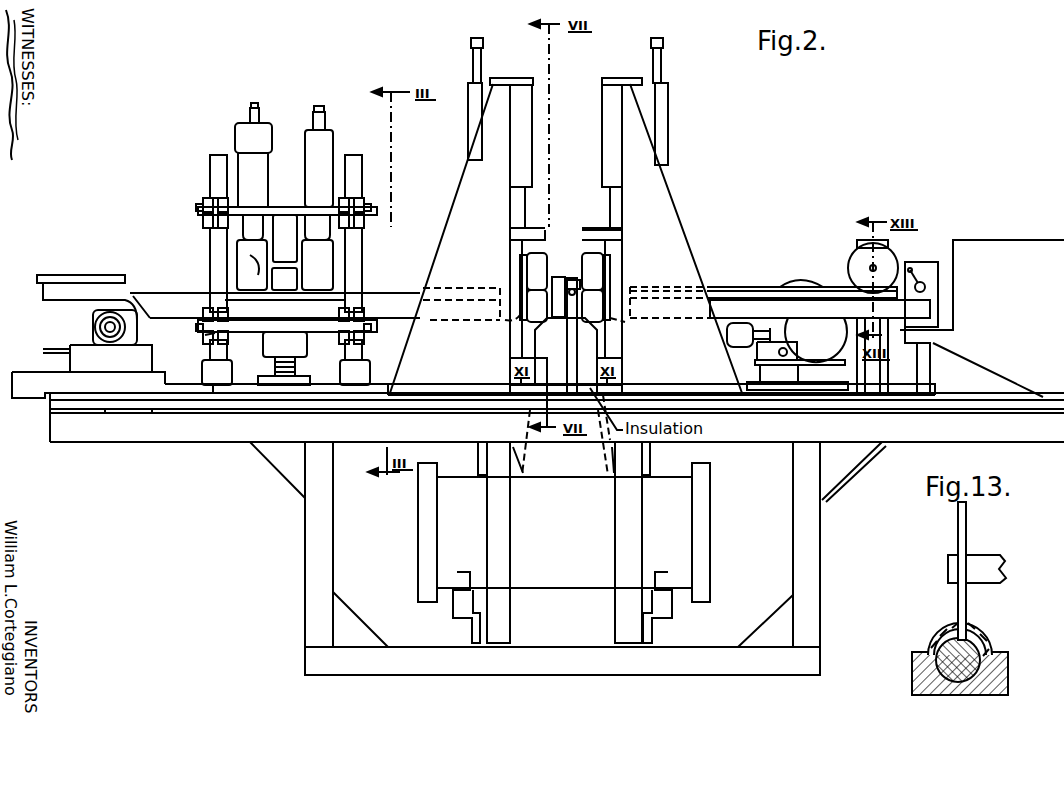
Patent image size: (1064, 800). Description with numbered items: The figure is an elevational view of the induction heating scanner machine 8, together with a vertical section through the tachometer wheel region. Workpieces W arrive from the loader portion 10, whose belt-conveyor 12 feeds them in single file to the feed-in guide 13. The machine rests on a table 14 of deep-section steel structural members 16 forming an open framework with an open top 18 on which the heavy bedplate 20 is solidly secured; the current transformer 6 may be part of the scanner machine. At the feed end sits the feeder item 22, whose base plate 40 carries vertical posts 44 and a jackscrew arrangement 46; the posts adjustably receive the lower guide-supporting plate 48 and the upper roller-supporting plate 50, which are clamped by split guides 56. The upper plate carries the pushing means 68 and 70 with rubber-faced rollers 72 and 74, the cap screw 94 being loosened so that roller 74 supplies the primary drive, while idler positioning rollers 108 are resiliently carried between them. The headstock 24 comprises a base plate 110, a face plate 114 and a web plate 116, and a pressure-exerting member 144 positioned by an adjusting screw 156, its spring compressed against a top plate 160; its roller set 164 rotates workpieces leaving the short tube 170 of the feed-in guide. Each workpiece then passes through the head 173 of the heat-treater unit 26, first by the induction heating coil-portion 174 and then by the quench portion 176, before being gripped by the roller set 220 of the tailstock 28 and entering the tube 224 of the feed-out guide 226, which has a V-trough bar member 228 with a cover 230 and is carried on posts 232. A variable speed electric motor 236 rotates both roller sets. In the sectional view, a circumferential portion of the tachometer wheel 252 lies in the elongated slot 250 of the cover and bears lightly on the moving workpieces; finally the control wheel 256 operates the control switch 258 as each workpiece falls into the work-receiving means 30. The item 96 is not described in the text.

In FIG. 2, the current transformer 6 is at (569, 529).
In FIG. 2, the scanner machine 8 is at (196, 517).
In FIG. 2, the loader portion 10 is at (33, 335).
In FIG. 2, the belt-conveyor 12 is at (75, 307).
In FIG. 2, the feed-in guide 13 is at (172, 295).
In FIG. 2, the table 14 is at (325, 535).
In FIG. 2, the structural members 16 is at (345, 605).
In FIG. 2, the open top 18 is at (447, 434).
In FIG. 2, the bedplate 20 is at (262, 402).
In FIG. 2, the feeder item 22 is at (300, 97).
In FIG. 2, the headstock 24 is at (423, 197).
In FIG. 2, the induction heating and quenching heat-treater unit 26 is at (565, 367).
In FIG. 2, the tailstock 28 is at (740, 210).
In FIG. 2, the work-receiving means 30 is at (1057, 277).
In FIG. 2, the base plate 40 is at (215, 397).
In FIG. 2, the vertical posts 44 is at (213, 175).
In FIG. 2, the jackscrew arrangement 46 is at (297, 365).
In FIG. 2, the guide-supporting plate 48 is at (320, 333).
In FIG. 2, the roller-supporting plate 50 is at (285, 210).
In FIG. 2, the split guides 56 is at (205, 338).
In FIG. 2, the workpiece pushing means 68 is at (297, 167).
In FIG. 2, the workpiece pushing means 70 is at (330, 148).
In FIG. 2, the roller 72 is at (242, 272).
In FIG. 2, the roller 74 is at (340, 262).
In FIG. 2, the cap screw 94 is at (238, 133).
In FIG. 2, the jaw face 96 is at (262, 258).
In FIG. 2, the idler positioning rollers 108 is at (285, 292).
In FIG. 2, the base plate 110 is at (466, 375).
In FIG. 2, the face plate 114 is at (512, 345).
In FIG. 2, the web plate 116 is at (445, 228).
In FIG. 2, the pressure-exerting member 144 is at (605, 104).
In FIG. 2, the adjusting screw 156 is at (481, 57).
In FIG. 13, the top plate 160 is at (985, 688).
In FIG. 2, the roller set 164 is at (538, 272).
In FIG. 2, the short tube 170 is at (505, 322).
In FIG. 2, the head 173 is at (556, 278).
In FIG. 2, the induction heating coil-portion 174 is at (557, 318).
In FIG. 2, the quench portion 176 is at (583, 270).
In FIG. 2, the set of rollers 220 is at (598, 272).
In FIG. 2, the tube 224 is at (630, 320).
In FIG. 2, the feed-out guide 226 is at (757, 287).
In FIG. 13, the feed-out guide 226 is at (1054, 673).
In FIG. 2, the V-trough bar member 228 is at (720, 325).
In FIG. 2, the cover 230 is at (833, 287).
In FIG. 13, the cover 230 is at (942, 635).
In FIG. 2, the posts 232 is at (770, 330).
In FIG. 2, the variable speed electric motor 236 is at (805, 272).
In FIG. 13, the elongated slot 250 is at (968, 632).
In FIG. 2, the tachometer wheel 252 is at (855, 262).
In FIG. 13, the tachometer wheel 252 is at (967, 532).
In FIG. 2, the control wheel 256 is at (925, 287).
In FIG. 2, the control switch 258 is at (925, 258).
In FIG. 13, the workpiece W is at (945, 682).